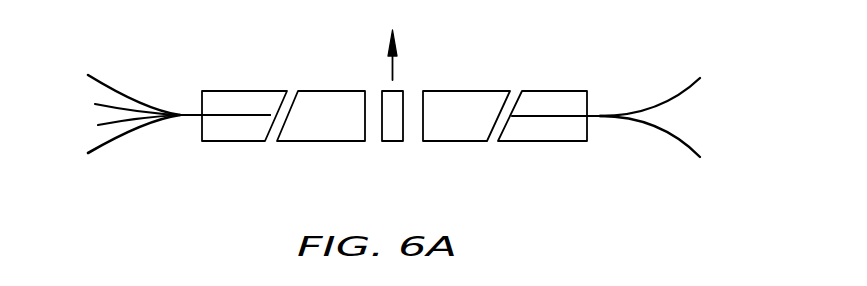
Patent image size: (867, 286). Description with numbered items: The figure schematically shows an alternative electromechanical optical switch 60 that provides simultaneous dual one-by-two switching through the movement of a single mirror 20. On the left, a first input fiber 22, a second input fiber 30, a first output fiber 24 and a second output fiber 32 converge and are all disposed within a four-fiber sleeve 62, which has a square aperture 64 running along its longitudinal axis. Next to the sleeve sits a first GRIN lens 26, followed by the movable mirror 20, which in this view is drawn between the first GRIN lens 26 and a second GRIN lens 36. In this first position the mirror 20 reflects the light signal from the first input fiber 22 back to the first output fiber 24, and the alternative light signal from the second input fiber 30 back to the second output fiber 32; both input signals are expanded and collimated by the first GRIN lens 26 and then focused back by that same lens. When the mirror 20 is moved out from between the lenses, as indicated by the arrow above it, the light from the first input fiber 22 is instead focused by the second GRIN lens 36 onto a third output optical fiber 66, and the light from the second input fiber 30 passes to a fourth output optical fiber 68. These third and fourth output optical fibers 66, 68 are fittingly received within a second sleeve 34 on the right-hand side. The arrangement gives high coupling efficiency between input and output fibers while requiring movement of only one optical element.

The electromechanical optical switch 60 is at (557, 38).
The first input fiber 22 is at (103, 79).
The first output fiber 24 is at (96, 104).
The second input fiber 30 is at (99, 119).
The second output fiber 32 is at (100, 145).
The four-fiber sleeve 62 is at (228, 91).
The square aperture 64 is at (210, 115).
The first GRIN lens 26 is at (302, 142).
The mirror 20 is at (390, 145).
The second GRIN lens 36 is at (462, 91).
The second sleeve 34 is at (549, 141).
The fourth output optical fiber 68 is at (680, 90).
The third output optical fiber 66 is at (680, 140).